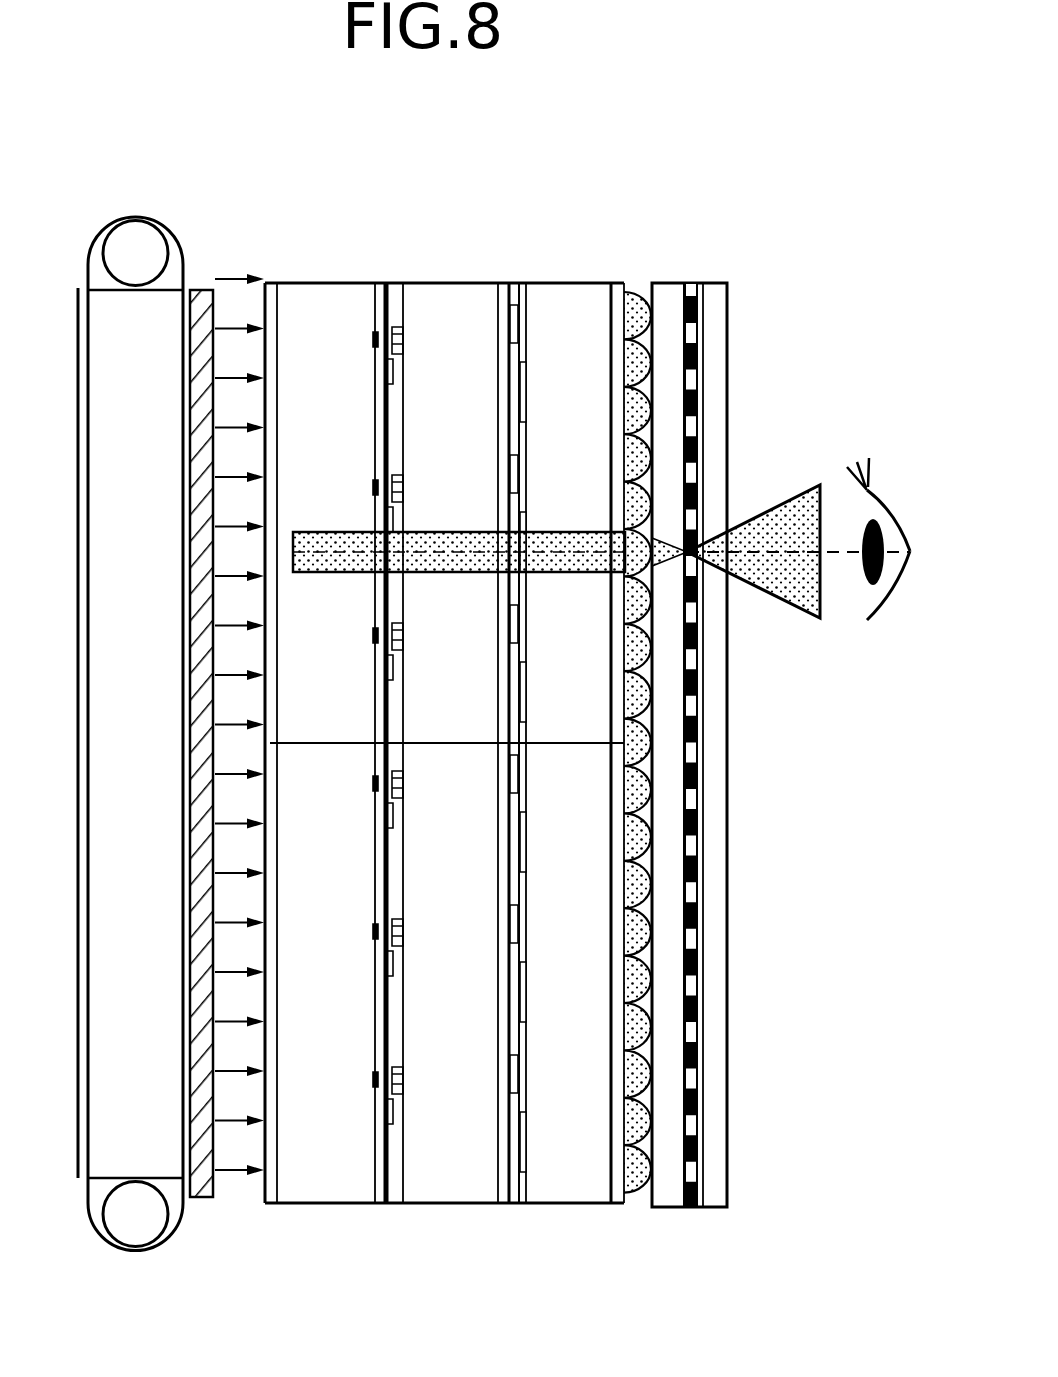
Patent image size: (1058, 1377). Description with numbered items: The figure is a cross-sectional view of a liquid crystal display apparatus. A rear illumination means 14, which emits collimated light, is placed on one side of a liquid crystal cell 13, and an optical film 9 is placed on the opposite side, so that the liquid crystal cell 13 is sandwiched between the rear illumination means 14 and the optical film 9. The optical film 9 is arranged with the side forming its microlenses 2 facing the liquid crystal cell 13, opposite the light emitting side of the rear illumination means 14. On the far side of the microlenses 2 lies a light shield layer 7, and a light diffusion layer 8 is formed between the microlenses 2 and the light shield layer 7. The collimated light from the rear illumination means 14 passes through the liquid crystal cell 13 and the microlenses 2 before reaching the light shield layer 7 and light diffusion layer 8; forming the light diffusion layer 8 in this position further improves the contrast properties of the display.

The rear illumination means 14 is at (212, 193).
The liquid crystal cell 13 is at (630, 193).
The optical film 9 is at (735, 212).
The microlenses 2 is at (633, 292).
The light shield layer 7 is at (690, 283).
The light diffusion layer 8 is at (712, 293).